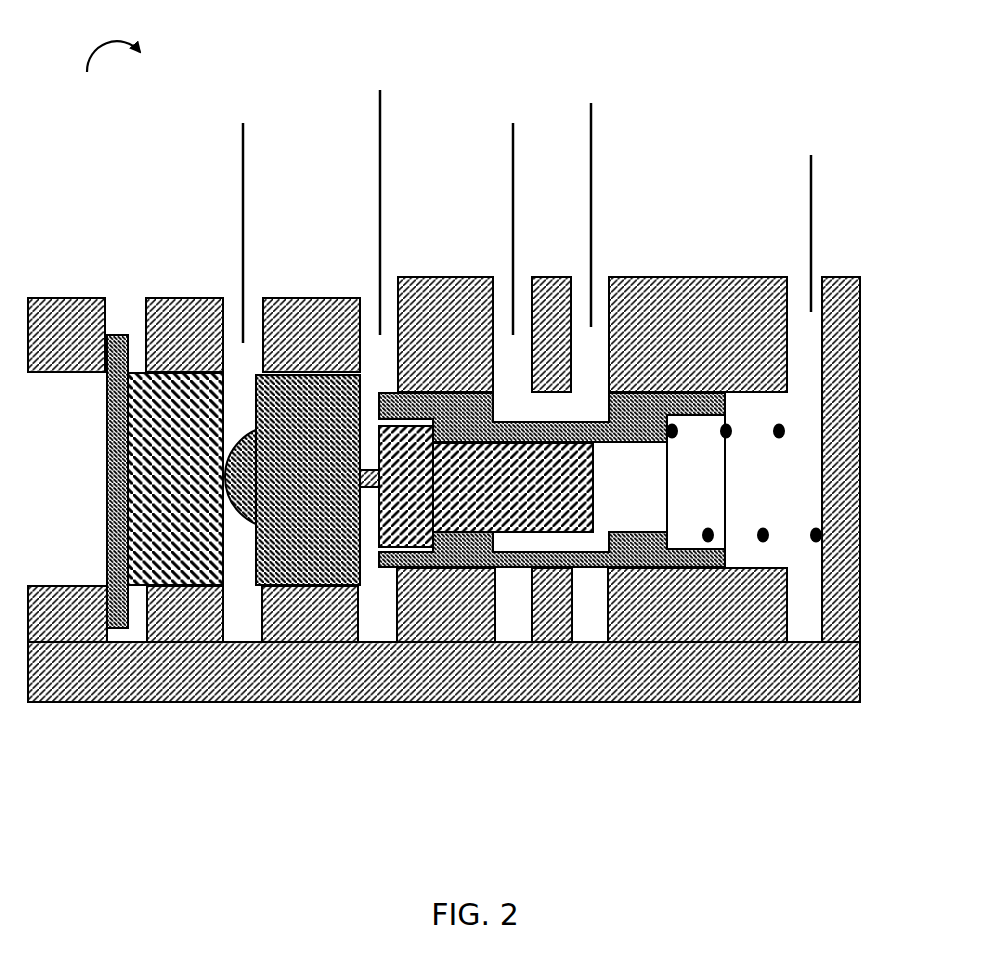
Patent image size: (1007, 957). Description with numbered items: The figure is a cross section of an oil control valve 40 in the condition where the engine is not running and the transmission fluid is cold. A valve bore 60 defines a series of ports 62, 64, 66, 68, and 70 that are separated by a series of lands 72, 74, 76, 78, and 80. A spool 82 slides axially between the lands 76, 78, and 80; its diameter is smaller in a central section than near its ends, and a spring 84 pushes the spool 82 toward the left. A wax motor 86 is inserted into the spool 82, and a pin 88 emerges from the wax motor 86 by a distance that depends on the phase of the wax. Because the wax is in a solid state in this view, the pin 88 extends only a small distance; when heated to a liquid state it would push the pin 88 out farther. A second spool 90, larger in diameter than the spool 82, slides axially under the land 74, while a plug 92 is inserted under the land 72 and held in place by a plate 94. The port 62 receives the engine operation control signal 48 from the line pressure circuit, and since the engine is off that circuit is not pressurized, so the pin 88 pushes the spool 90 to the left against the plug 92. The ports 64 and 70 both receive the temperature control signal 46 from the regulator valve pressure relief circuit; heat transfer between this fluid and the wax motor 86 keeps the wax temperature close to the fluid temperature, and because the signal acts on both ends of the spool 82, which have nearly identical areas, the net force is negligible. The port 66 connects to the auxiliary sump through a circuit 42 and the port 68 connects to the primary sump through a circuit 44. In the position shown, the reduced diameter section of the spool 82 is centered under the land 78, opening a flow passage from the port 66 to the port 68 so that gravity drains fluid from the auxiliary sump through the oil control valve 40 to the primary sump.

The oil control valve 40 is at (111, 75).
The circuit 42 is at (515, 174).
The circuit 44 is at (592, 170).
The temperature control signal 46 is at (597, 174).
The engine operation control signal 48 is at (245, 185).
The valve bore 60 is at (533, 702).
The port 62 is at (232, 327).
The port 64 is at (370, 327).
The port 66 is at (503, 305).
The port 68 is at (598, 305).
The port 70 is at (802, 302).
The land 72 is at (173, 298).
The land 74 is at (327, 298).
The land 76 is at (457, 277).
The land 78 is at (562, 277).
The land 80 is at (723, 277).
The spool 82 is at (592, 553).
The spring 84 is at (763, 541).
The wax motor 86 is at (410, 548).
The pin 88 is at (372, 487).
The spool 90 is at (322, 586).
The plug 92 is at (183, 586).
The plate 94 is at (117, 335).